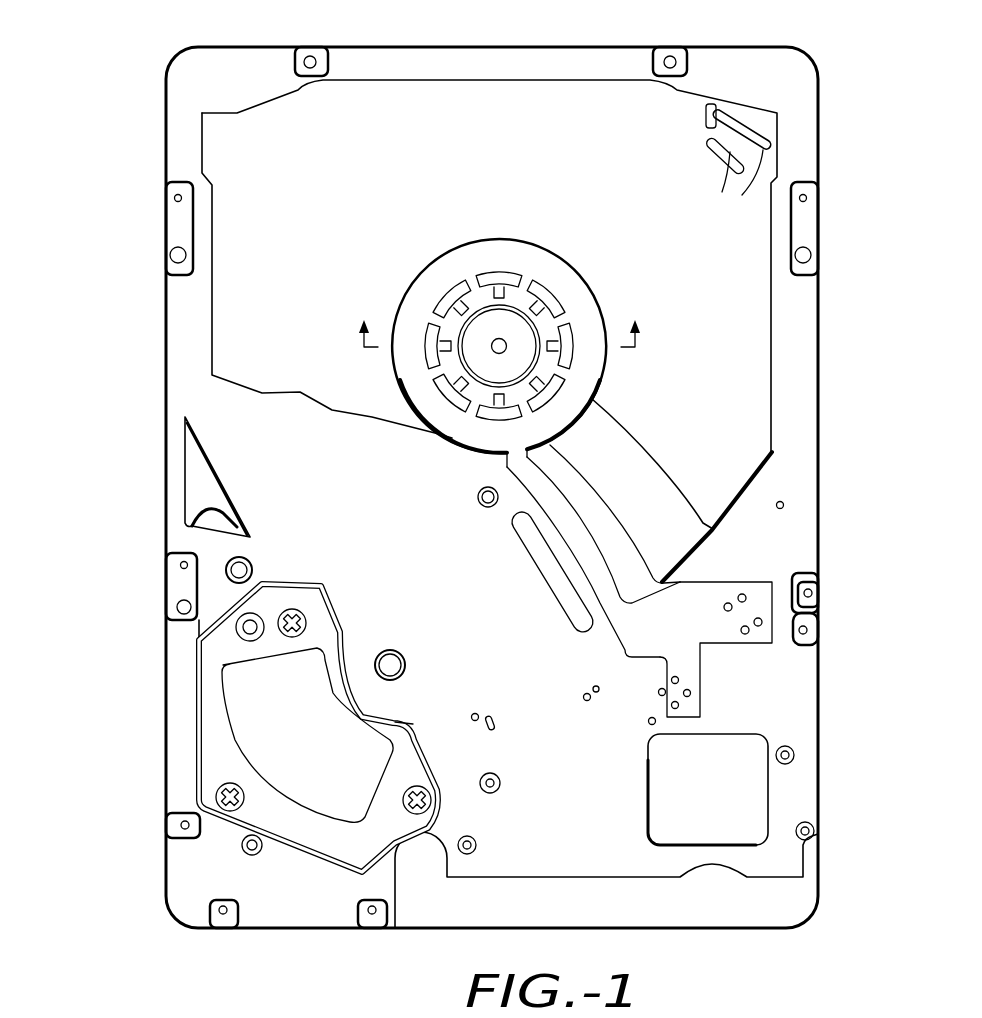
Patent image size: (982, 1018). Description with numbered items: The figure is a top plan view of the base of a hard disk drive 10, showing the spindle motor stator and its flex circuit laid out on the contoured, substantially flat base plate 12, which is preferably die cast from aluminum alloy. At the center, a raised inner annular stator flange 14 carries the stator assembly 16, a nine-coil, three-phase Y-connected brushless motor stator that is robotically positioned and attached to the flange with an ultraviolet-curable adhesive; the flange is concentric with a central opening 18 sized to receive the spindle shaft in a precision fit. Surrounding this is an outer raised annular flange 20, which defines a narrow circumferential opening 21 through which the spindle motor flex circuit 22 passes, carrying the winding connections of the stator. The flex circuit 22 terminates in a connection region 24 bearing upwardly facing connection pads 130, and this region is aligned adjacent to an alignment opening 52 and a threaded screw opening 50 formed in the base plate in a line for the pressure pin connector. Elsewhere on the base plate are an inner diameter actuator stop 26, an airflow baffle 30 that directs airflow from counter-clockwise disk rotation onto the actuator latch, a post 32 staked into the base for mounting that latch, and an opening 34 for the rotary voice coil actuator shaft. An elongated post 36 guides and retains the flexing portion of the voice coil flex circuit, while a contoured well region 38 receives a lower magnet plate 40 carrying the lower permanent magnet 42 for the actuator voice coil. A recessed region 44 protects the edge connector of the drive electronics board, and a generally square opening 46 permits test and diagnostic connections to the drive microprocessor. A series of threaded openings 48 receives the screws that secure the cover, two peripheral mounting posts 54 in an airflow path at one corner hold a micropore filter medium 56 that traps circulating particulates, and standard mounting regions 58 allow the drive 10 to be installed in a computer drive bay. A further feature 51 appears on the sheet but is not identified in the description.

The hard disk drive 10 is at (100, 440).
The base plate 12 is at (798, 322).
The inner annular stator flange 14 is at (514, 312).
The stator assembly 16 is at (512, 285).
The central opening 18 is at (508, 343).
The outer raised annular flange 20 is at (437, 263).
The circumferential opening 21 is at (500, 456).
The spindle motor flex circuit 22 is at (582, 495).
The connection region 24 is at (700, 715).
The inner diameter actuator stop 26 is at (485, 504).
The airflow baffle 30 is at (198, 470).
The post 32 is at (252, 566).
The opening 34 is at (406, 666).
The elongated post 36 is at (497, 723).
The contoured well region 38 is at (412, 718).
The lower magnet plate 40 is at (288, 592).
The lower permanent magnet 42 is at (308, 742).
The recessed region 44 is at (625, 897).
The square opening 46 is at (725, 797).
The threaded openings 48 is at (310, 56).
The threaded screw opening 50 is at (596, 693).
The holes 51 is at (476, 712).
The alignment opening 52 is at (658, 692).
The peripheral mounting posts 54 is at (738, 176).
The micropore filter medium 56 is at (712, 133).
The mounting regions 58 is at (170, 255).
The connection pads 130 is at (671, 678).